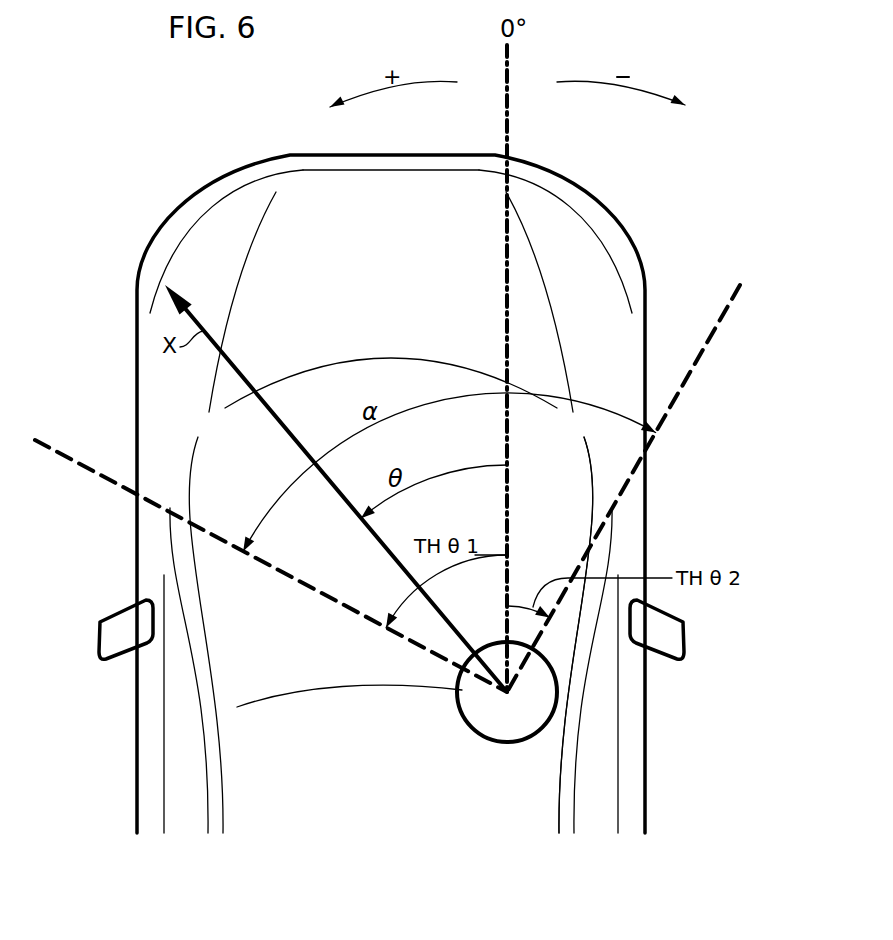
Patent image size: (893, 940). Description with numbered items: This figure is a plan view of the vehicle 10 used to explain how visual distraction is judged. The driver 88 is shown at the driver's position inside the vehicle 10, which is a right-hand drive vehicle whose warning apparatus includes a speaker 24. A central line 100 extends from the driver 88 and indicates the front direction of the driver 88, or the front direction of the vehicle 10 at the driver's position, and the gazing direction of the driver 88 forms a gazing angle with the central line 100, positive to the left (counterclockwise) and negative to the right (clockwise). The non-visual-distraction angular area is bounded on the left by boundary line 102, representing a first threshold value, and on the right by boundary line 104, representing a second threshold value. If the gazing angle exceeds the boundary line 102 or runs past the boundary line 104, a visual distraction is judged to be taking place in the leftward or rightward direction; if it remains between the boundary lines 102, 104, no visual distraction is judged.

The vehicle 10 is at (218, 109).
The speaker 24 is at (587, 518).
The driver 88 is at (470, 741).
The central line 100 is at (512, 128).
The non-visual-distraction area boundary line 102 is at (277, 573).
The non-visual-distraction area boundary line 104 is at (731, 318).